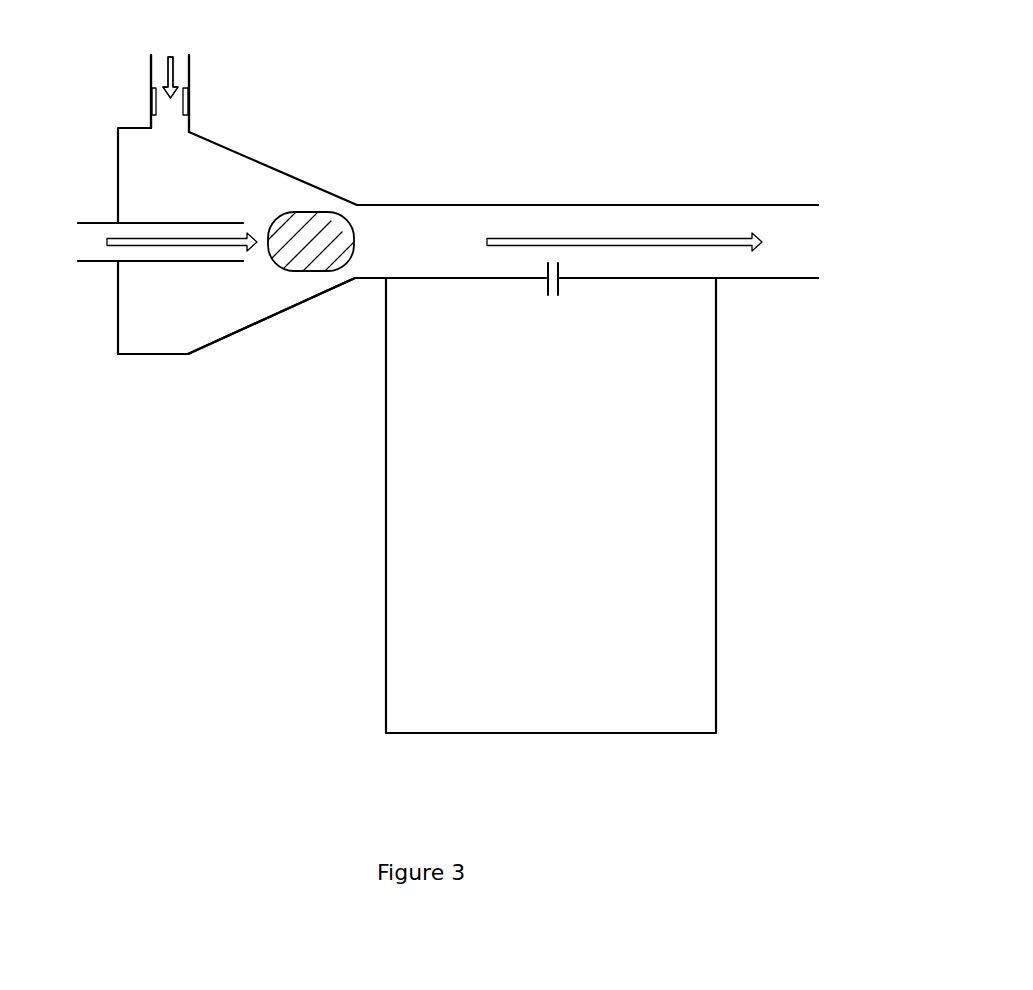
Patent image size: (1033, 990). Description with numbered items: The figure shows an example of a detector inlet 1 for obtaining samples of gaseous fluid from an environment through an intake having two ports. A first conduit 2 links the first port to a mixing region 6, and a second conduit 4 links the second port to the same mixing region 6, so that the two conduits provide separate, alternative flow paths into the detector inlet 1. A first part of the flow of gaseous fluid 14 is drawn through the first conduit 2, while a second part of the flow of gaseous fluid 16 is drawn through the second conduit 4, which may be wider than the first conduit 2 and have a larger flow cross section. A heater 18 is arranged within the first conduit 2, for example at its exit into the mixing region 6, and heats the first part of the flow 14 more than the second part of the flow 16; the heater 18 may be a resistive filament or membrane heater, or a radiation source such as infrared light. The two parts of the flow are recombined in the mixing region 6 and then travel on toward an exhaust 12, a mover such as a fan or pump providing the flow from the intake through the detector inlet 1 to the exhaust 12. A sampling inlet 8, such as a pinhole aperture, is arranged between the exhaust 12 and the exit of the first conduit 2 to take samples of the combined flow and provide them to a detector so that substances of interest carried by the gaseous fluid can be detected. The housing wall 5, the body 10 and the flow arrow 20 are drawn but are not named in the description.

The detector inlet 1 is at (604, 192).
The first conduit 2 is at (189, 62).
The second conduit 4 is at (105, 250).
The housing wall 5 is at (243, 308).
The mixing region 6 is at (300, 222).
The sampling inlet 8 is at (560, 273).
The catalytic converter housing 10 is at (492, 708).
The exhaust 12 is at (792, 250).
The first part of the flow of gaseous fluid 14 is at (163, 78).
The second part of the flow of gaseous fluid 16 is at (183, 243).
The heater 18 is at (186, 100).
The mixed gas flow arrow 20 is at (645, 238).